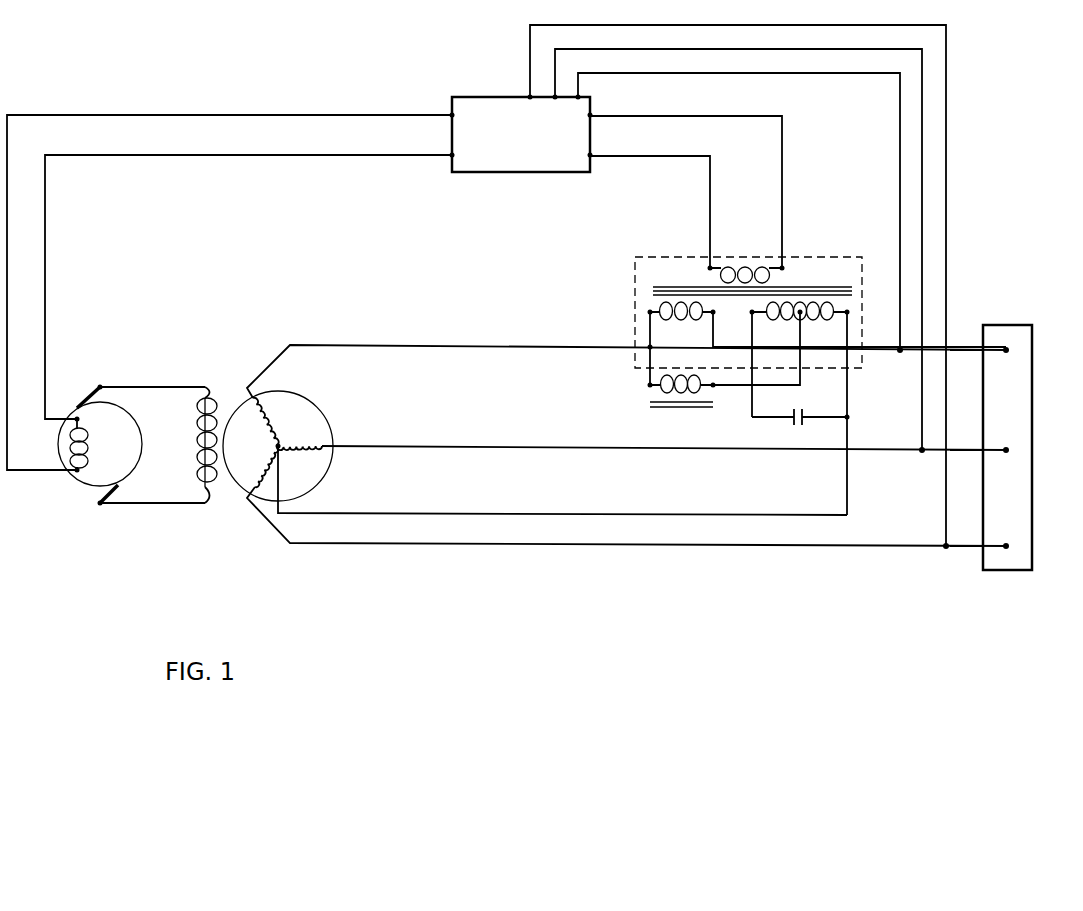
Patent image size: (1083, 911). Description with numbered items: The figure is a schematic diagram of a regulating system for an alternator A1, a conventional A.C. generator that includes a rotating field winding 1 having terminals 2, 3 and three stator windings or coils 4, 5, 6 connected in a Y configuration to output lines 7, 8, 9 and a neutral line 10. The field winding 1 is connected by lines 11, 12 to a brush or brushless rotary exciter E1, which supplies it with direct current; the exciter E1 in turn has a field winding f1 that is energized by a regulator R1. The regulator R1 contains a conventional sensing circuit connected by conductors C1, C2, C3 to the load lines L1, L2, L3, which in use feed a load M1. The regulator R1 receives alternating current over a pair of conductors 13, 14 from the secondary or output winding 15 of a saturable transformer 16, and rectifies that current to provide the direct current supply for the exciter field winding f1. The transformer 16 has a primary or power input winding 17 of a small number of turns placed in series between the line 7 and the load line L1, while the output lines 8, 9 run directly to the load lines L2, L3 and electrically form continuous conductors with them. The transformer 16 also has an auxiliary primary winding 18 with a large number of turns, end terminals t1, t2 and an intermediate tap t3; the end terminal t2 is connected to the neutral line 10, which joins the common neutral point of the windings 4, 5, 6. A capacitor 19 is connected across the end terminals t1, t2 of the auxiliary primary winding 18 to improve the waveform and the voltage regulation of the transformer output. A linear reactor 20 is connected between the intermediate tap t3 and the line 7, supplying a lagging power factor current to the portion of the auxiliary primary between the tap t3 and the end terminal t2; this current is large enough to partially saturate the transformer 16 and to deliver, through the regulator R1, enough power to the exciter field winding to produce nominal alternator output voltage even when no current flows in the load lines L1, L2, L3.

The rotating field winding 1 is at (197, 447).
The terminal 2 is at (205, 392).
The terminal 3 is at (201, 504).
The stator winding 4 is at (265, 412).
The stator winding 5 is at (308, 446).
The stator winding 6 is at (257, 473).
The output line 7 is at (500, 346).
The output line 8 is at (472, 446).
The output line 9 is at (580, 543).
The neutral line 10 is at (482, 514).
The line 11 is at (143, 387).
The line 12 is at (143, 504).
The conductor 13 is at (637, 116).
The conductor 14 is at (632, 158).
The secondary or output winding 15 is at (745, 268).
The saturable transformer 16 is at (634, 320).
The primary or power input winding 17 is at (652, 303).
The auxiliary primary or power input winding 18 is at (783, 312).
The capacitor 19 is at (794, 421).
The linear reactor 20 is at (650, 390).
The regulator R1 is at (455, 97).
The conductor C1 is at (900, 112).
The conductor C2 is at (922, 118).
The conductor C3 is at (946, 136).
The rotary exciter E1 is at (75, 483).
The field winding f1 is at (70, 441).
The alternator A1 is at (310, 395).
The load M1 is at (1034, 355).
The load line L1 is at (976, 352).
The load line L2 is at (962, 452).
The load line L3 is at (968, 548).
The end terminal t1 is at (750, 313).
The end terminal t2 is at (847, 312).
The intermediate tap t3 is at (801, 316).